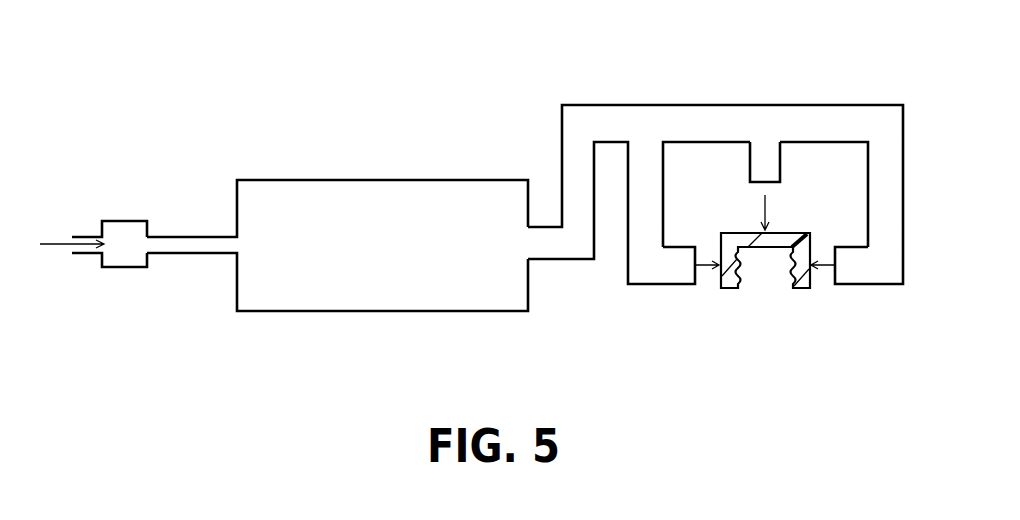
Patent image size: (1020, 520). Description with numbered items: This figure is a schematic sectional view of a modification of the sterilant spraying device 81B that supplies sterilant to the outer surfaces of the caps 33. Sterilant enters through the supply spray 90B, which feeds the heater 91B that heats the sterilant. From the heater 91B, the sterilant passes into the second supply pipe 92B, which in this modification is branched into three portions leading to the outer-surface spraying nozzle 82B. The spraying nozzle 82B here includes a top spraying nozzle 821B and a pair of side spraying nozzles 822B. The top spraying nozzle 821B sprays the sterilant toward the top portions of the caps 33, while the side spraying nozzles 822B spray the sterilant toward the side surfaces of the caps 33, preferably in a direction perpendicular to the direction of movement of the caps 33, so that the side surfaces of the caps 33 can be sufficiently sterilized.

The sterilant spraying device 81B is at (480, 152).
The supply spray 90B is at (123, 232).
The heater 91B is at (390, 197).
The second supply pipe 92B is at (673, 117).
The outer-surface spraying nozzle 82B is at (759, 266).
The top spraying nozzle 821B is at (767, 163).
The side spraying nozzles 822B is at (652, 273).
The caps 33 is at (733, 243).